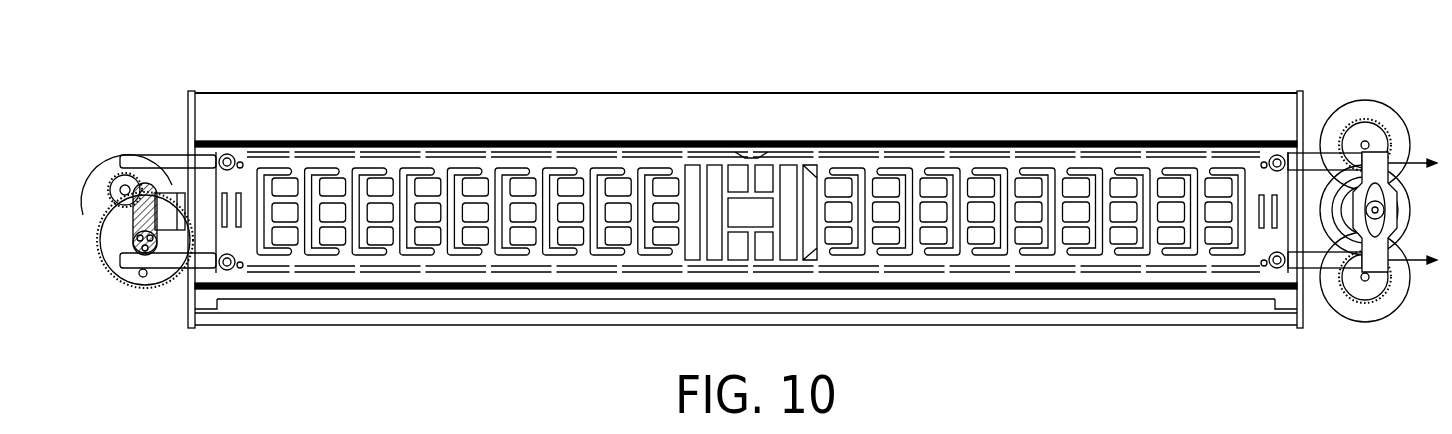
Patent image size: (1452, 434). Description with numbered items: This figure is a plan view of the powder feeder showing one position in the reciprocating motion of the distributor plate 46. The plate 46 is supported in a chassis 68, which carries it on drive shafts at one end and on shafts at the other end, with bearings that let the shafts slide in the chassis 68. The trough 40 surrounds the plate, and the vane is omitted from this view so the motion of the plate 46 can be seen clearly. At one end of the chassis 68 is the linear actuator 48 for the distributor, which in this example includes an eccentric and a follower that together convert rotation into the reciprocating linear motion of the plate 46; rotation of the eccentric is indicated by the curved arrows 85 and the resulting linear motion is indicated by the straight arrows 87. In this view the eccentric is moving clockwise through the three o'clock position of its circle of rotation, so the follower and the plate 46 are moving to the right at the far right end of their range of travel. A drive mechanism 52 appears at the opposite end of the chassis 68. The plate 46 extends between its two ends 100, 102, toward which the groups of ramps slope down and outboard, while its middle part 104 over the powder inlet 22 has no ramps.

The trough 40 is at (1032, 108).
The chassis 68 is at (189, 110).
The drive mechanism 52 is at (114, 126).
The end 100 is at (250, 172).
The end 102 is at (1252, 171).
The distributor plate 46 is at (632, 166).
The middle part 104 is at (687, 140).
The powder inlet 22 is at (811, 168).
The linear actuator 48 is at (1370, 178).
The straight arrows 87 is at (1420, 165).
The curved arrows 85 is at (1420, 236).